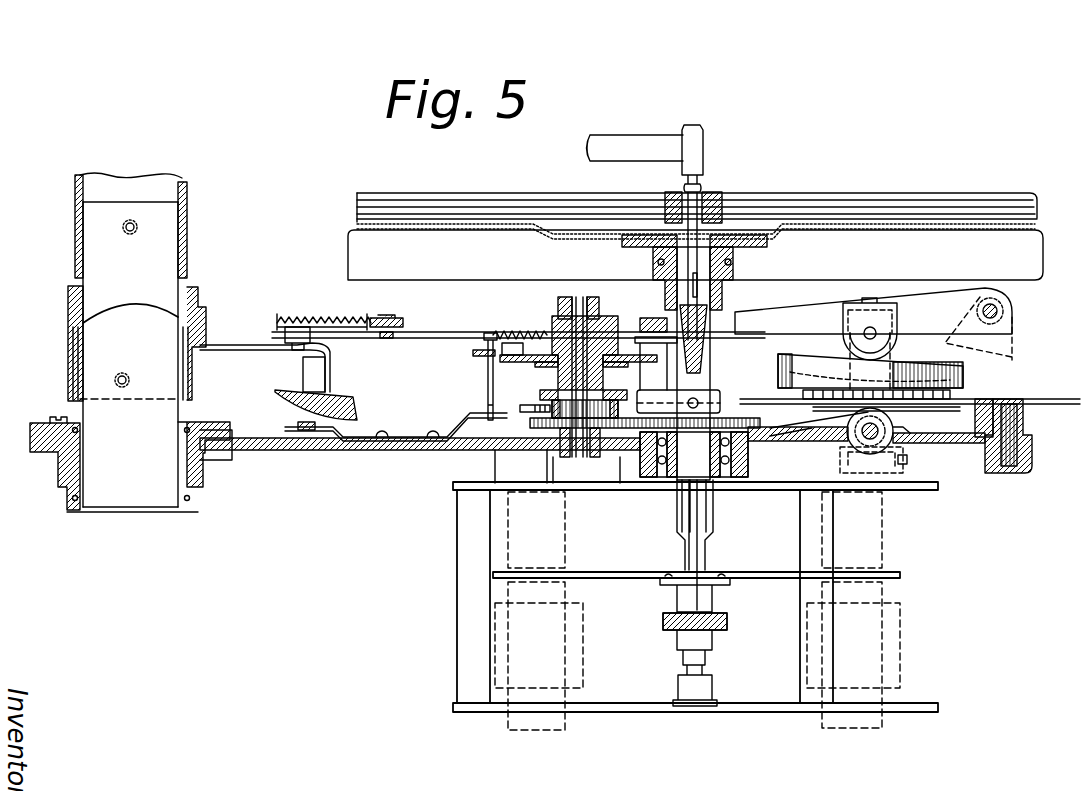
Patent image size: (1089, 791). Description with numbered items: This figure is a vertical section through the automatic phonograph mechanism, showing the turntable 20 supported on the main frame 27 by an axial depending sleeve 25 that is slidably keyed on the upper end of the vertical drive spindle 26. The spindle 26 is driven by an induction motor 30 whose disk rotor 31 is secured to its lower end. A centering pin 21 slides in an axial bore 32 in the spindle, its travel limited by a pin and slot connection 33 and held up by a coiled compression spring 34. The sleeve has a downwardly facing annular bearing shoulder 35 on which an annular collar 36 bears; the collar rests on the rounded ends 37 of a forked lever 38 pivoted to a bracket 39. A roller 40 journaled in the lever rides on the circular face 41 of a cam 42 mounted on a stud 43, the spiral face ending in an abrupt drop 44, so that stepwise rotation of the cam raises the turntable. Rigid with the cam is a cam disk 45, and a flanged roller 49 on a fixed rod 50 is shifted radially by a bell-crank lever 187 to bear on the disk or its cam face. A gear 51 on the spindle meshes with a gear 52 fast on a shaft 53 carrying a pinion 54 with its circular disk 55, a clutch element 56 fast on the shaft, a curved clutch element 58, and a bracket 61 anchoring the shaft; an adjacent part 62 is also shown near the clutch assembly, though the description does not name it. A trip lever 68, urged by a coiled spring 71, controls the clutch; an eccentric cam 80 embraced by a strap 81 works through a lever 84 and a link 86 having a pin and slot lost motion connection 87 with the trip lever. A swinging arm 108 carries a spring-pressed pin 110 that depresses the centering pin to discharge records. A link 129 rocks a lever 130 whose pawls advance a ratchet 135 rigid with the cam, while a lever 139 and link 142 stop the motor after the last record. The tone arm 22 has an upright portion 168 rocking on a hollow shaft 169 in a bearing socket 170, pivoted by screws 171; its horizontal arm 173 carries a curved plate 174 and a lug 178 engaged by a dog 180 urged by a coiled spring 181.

The turntable 20 is at (1044, 240).
The centering pin 21 is at (706, 197).
The tone arm 22 is at (186, 190).
The sleeve 25 is at (658, 248).
The drive spindle 26 is at (716, 366).
The main frame 27 is at (370, 450).
The induction motor 30 is at (585, 636).
The disk rotor 31 is at (733, 578).
The axial bore 32 is at (708, 318).
The pin and slot connection 33 is at (668, 305).
The coiled compression spring 34 is at (672, 318).
The annular bearing shoulder 35 is at (660, 264).
The annular collar 36 is at (745, 262).
The rounded ends 37 is at (750, 277).
The forked lever 38 is at (822, 308).
The bracket 39 is at (1014, 340).
The roller 40 is at (898, 347).
The circular cam face 41 is at (962, 373).
The cam 42 is at (967, 385).
The stud 43 is at (908, 460).
The abrupt drop 44 is at (798, 372).
The cam disk 45 is at (950, 406).
The flanged roller 49 is at (890, 427).
The fixed rod 50 is at (842, 460).
The gear 51 is at (643, 446).
The gear 52 is at (553, 440).
The shaft 53 is at (590, 384).
The pinion 54 is at (560, 388).
The circular disk 55 is at (546, 362).
The clutch element 56 is at (552, 328).
The clutch element 58 is at (510, 355).
The bracket 61 is at (588, 306).
The pin 62 is at (522, 412).
The lever 68 is at (473, 352).
The coiled spring 71 is at (510, 334).
The eccentric cam 80 is at (580, 440).
The strap 81 is at (618, 405).
The lever 84 is at (298, 430).
The link 86 is at (430, 433).
The pin and slot lost motion connection 87 is at (488, 385).
The swinging arm 108 is at (628, 148).
The spring-pressed pin 110 is at (704, 182).
The link 129 is at (398, 322).
The lever 130 is at (453, 332).
The ratchet 135 is at (953, 398).
The lever 139 is at (1034, 405).
The link 142 is at (1060, 398).
The upright portion 168 is at (68, 304).
The hollow shaft 169 is at (80, 404).
The bearing socket 170 is at (68, 488).
The screws 171 is at (116, 380).
The horizontal arm 173 is at (240, 349).
The curved plate 174 is at (340, 394).
The lug 178 is at (303, 355).
The dog 180 is at (274, 326).
The coiled spring 181 is at (338, 320).
The bell-crank lever 187 is at (818, 428).